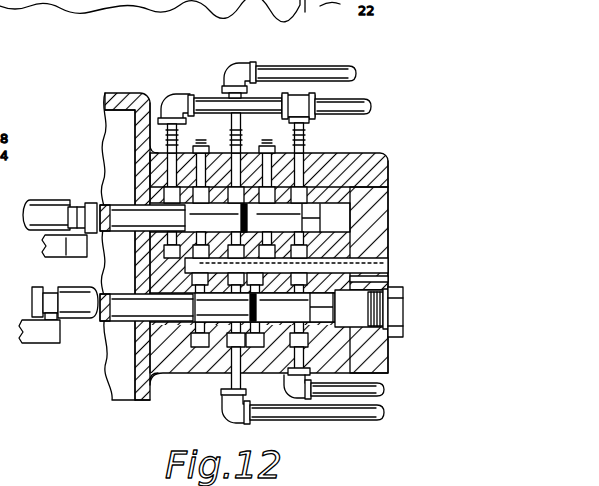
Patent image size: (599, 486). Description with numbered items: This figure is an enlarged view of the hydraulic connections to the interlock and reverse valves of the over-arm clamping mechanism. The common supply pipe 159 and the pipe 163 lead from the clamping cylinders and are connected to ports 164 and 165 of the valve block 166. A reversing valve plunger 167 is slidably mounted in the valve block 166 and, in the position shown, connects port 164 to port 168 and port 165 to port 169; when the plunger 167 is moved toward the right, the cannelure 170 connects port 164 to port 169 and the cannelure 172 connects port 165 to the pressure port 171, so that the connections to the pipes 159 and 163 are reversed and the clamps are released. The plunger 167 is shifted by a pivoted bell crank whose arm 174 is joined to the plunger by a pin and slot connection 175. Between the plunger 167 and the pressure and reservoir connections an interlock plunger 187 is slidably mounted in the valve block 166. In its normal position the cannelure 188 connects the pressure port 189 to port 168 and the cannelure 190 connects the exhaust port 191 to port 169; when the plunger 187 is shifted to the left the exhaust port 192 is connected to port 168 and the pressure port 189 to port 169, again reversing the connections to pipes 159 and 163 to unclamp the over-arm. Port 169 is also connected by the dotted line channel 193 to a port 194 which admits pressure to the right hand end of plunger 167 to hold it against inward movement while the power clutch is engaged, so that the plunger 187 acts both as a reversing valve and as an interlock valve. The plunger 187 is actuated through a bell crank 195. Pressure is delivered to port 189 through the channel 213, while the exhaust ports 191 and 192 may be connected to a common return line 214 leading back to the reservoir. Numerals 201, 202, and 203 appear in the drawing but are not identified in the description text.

The common supply pipe 159 is at (345, 412).
The pipe 163 is at (372, 390).
The port 164 is at (211, 378).
The port 165 is at (388, 358).
The valve block 166 is at (383, 177).
The reversing valve plunger 167 is at (110, 327).
The port 168 is at (128, 290).
The port 169 is at (265, 307).
The cannelure 170 is at (214, 372).
The port 171 is at (401, 294).
The cannelure 172 is at (284, 366).
The arm 174 is at (40, 336).
The pin and slot connection 175 is at (48, 296).
The interlock plunger 187 is at (115, 216).
The cannelure 188 is at (207, 160).
The pressure port 189 is at (242, 152).
The cannelure 190 is at (283, 148).
The exhaust port 191 is at (316, 161).
The exhaust port 192 is at (172, 182).
The channel 193 is at (392, 250).
The port 194 is at (393, 279).
The bell crank 195 is at (54, 257).
The tube 201 is at (27, 212).
The coupling 202 is at (60, 226).
The block 203 is at (40, 254).
The channel 213 is at (273, 72).
The common return line 214 is at (345, 107).